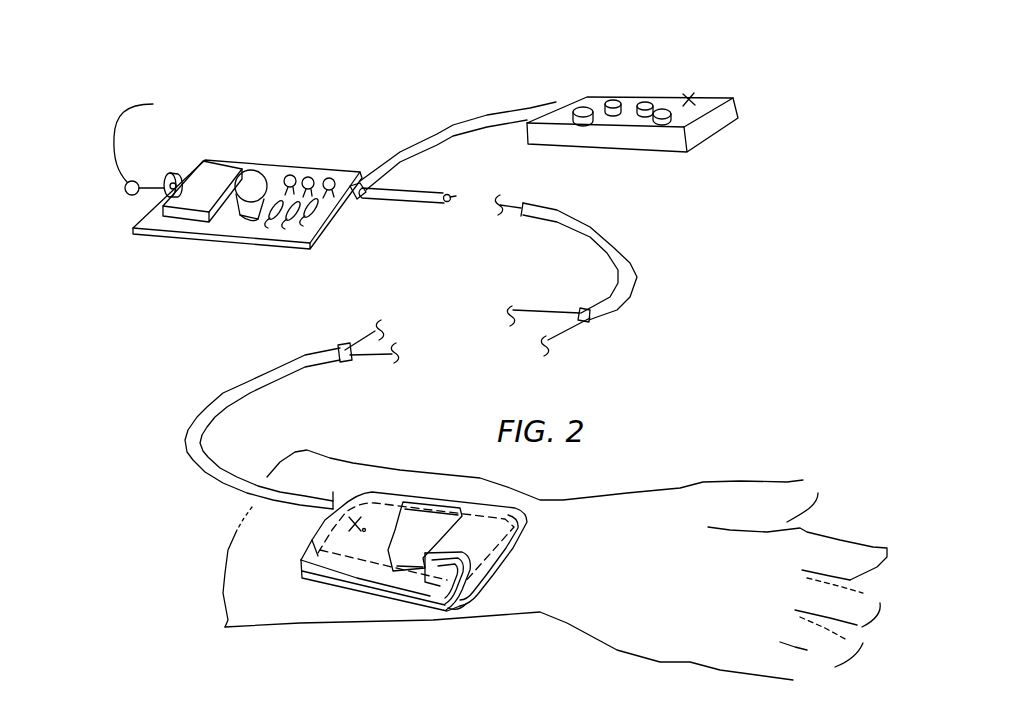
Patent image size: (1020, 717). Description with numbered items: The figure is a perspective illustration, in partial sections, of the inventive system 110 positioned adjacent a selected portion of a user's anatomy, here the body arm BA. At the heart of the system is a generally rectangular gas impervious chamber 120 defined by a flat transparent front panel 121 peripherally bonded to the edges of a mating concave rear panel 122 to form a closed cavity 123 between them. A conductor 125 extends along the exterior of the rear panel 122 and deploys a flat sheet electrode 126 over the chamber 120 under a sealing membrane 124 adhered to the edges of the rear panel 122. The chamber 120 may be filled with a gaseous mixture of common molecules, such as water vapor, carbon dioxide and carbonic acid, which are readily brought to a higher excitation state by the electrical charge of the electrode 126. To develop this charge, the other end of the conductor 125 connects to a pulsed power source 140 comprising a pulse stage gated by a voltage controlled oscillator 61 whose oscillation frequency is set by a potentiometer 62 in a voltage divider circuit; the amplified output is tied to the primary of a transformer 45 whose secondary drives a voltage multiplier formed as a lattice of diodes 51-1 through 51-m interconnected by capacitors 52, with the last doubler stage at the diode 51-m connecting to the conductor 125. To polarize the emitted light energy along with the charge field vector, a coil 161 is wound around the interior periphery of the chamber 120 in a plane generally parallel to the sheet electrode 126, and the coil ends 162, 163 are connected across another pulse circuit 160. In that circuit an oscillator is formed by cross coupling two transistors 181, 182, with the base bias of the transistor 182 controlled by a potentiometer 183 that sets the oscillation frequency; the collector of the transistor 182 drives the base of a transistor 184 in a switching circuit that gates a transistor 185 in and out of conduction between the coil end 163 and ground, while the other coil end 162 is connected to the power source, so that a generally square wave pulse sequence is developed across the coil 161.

The pulsed power source 140 is at (226, 244).
The voltage controlled oscillator 61 is at (214, 172).
The potentiometer 62 is at (164, 178).
The transformer 45 is at (260, 178).
The capacitors 52 is at (328, 200).
The diode 51-1 is at (280, 220).
The diode 51-m is at (306, 215).
The conductor 125 is at (356, 197).
The inventive system 110 is at (422, 187).
The coil end 163 is at (447, 125).
The coil end 162 is at (583, 320).
The pulse circuit 160 is at (696, 141).
The transistor 181 is at (580, 104).
The transistor 182 is at (615, 100).
The potentiometer 183 is at (690, 98).
The transistor 184 is at (621, 100).
The transistor 185 is at (660, 108).
The body arm BA is at (597, 623).
The gas impervious chamber 120 is at (352, 580).
The front panel 121 is at (528, 513).
The sheet electrode 126 is at (425, 520).
The rear panel 122 is at (483, 597).
The closed cavity 123 is at (463, 606).
The sealing membrane 124 is at (313, 556).
The coil 161 is at (572, 486).